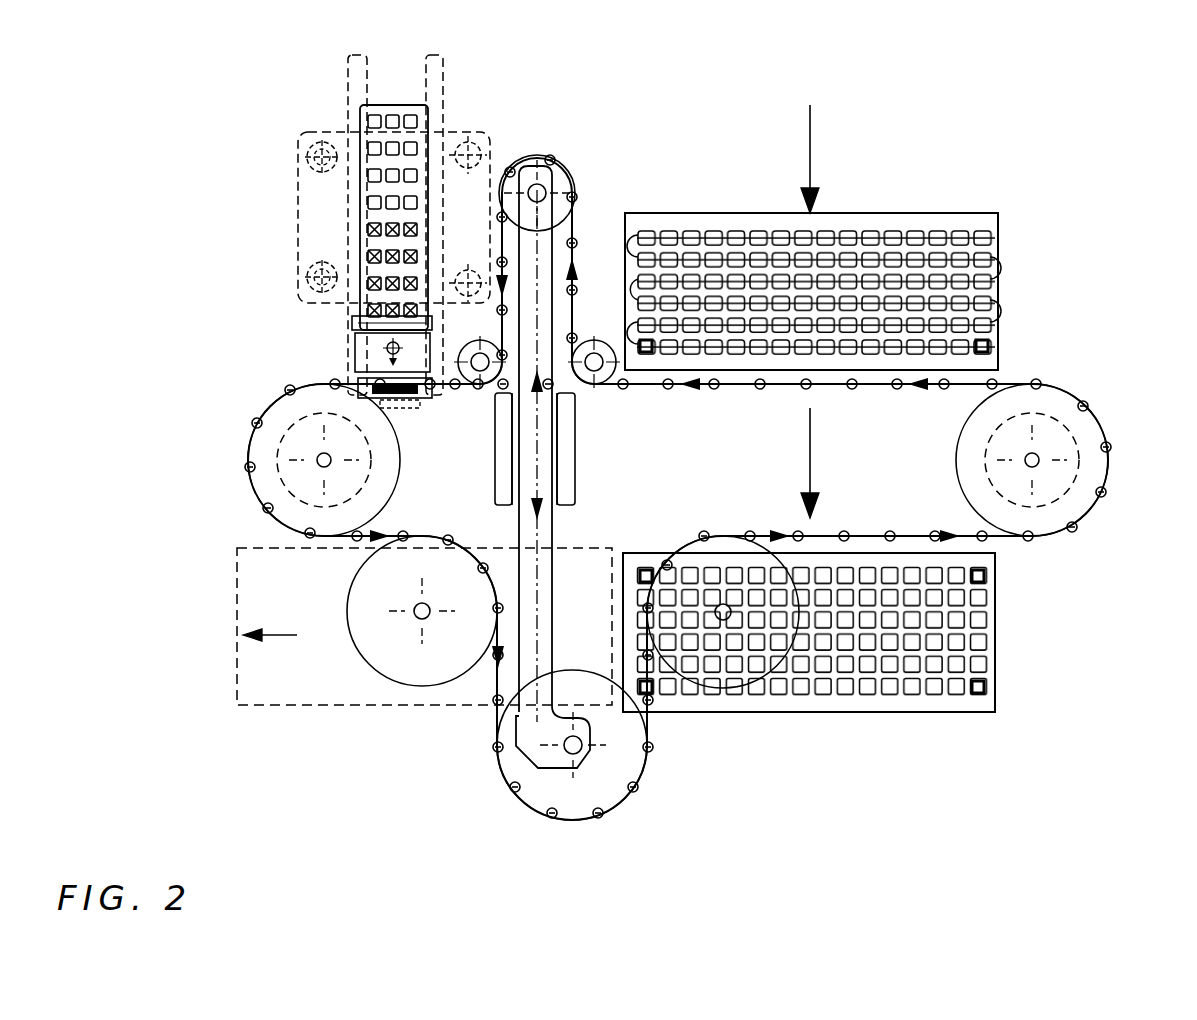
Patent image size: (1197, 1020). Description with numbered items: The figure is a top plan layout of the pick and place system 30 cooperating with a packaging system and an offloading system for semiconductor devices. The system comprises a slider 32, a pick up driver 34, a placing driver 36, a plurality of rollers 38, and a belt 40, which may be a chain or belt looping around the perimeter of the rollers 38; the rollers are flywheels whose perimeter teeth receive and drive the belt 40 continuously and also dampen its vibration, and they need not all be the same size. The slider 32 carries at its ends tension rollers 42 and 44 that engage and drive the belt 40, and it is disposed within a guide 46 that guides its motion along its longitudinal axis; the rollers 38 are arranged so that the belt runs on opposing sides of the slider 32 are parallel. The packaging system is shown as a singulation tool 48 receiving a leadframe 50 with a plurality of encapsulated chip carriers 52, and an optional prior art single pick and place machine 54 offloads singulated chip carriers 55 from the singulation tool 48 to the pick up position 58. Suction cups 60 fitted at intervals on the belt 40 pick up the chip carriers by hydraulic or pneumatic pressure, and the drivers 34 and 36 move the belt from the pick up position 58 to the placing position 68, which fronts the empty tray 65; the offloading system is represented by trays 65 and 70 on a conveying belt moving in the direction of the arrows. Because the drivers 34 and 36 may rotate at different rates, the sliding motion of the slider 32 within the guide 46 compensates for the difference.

The pick and place system 30 is at (955, 195).
The slider 32 is at (555, 535).
The pick up driver 34 is at (392, 474).
The placing driver 36 is at (1104, 468).
The rollers 38 is at (478, 340).
The belt 40 is at (742, 392).
The tension roller 42 is at (572, 168).
The tension roller 44 is at (612, 803).
The guide 46 is at (577, 452).
The singulation tool 48 is at (488, 140).
The leadframe 50 is at (375, 103).
The encapsulated chip carriers 52 is at (410, 110).
The prior art single pick and place machine 54 is at (380, 348).
The singulated chip carriers 55 is at (390, 318).
The pick up position 58 is at (340, 387).
The suction cups 60 is at (452, 392).
The tray 65 is at (998, 322).
The placing position 68 is at (900, 388).
The tray 70 is at (1010, 648).